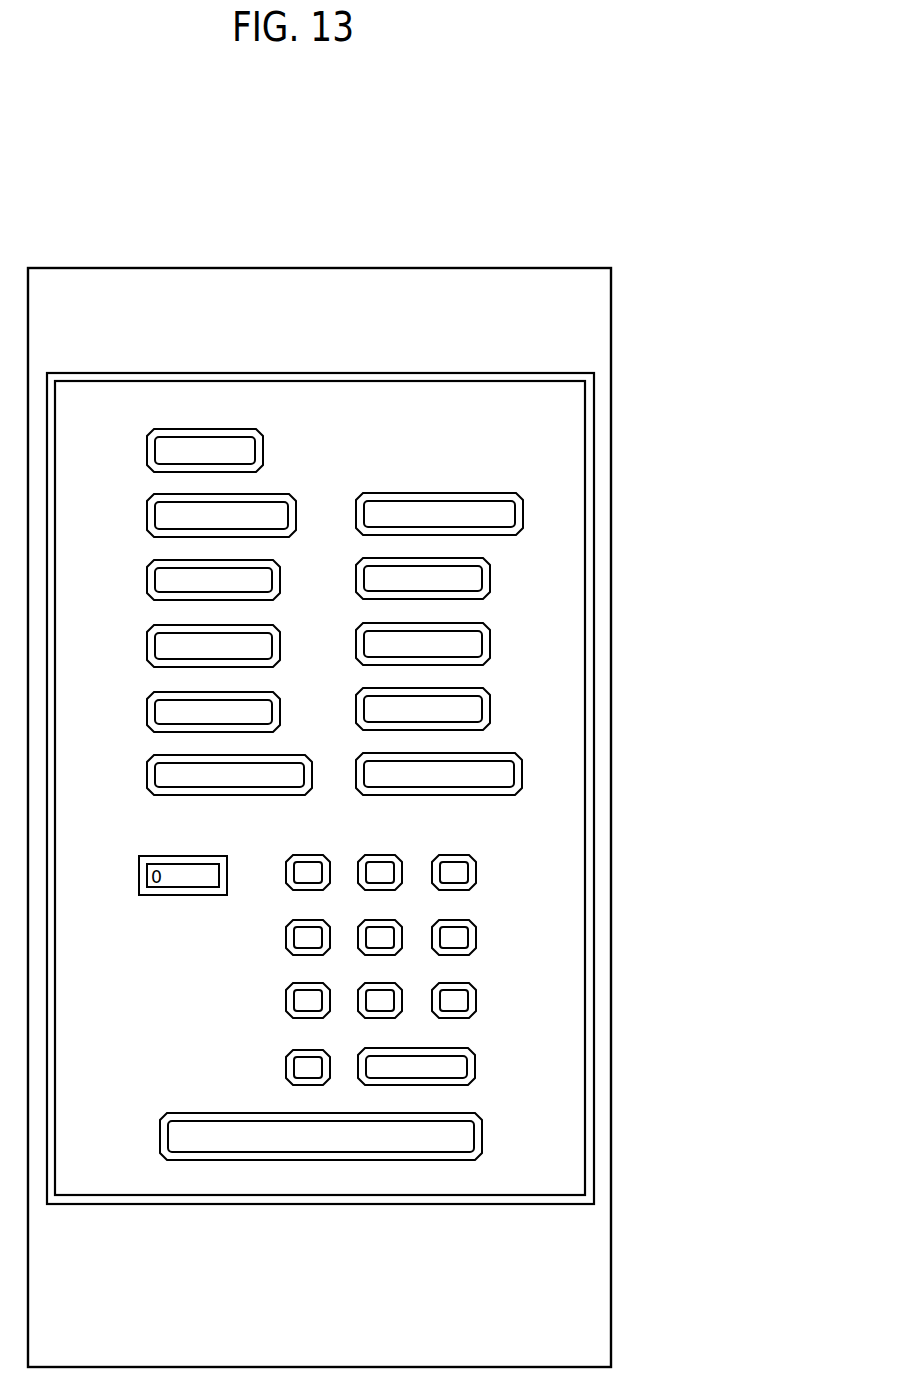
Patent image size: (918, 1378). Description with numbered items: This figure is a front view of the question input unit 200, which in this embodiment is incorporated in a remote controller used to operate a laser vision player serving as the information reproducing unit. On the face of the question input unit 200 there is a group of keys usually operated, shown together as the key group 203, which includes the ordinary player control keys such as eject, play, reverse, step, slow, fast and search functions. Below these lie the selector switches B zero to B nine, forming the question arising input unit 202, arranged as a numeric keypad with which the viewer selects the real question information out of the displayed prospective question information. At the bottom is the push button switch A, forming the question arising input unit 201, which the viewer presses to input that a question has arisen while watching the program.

The question input unit 200 is at (595, 326).
The question arising input unit 201 is at (452, 1140).
The question arising input unit 202 is at (495, 1090).
The group of keys 203 is at (563, 559).